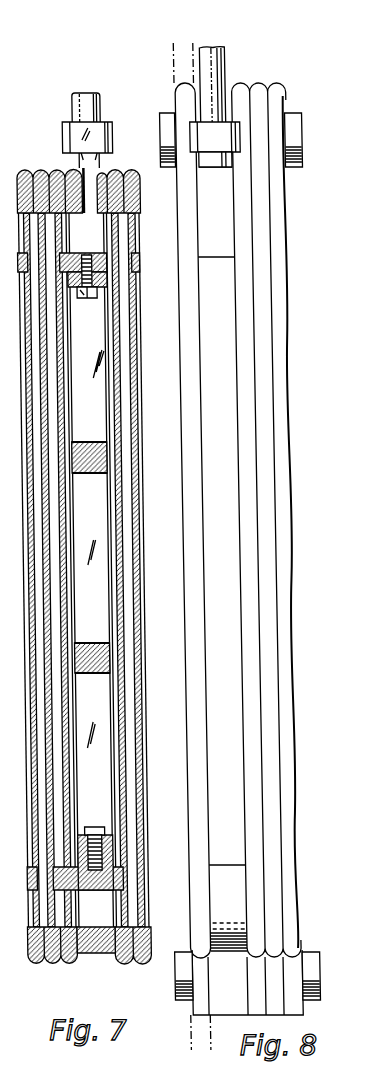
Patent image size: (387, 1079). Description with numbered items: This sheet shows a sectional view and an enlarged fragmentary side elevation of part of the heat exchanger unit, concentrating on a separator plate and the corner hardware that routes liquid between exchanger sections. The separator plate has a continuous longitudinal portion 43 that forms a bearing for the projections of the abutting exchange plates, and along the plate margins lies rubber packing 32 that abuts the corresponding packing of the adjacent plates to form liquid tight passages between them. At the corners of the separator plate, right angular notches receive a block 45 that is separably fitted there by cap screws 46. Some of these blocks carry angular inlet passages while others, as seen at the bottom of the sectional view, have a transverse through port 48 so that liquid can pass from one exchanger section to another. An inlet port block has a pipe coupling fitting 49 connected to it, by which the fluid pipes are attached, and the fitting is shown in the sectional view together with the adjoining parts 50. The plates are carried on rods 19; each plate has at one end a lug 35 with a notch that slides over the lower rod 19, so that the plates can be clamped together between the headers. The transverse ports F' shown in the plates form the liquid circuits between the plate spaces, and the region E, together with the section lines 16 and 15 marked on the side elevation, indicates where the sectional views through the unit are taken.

In FIG. 7, the bolt 50 is at (98, 113).
In FIG. 8, the bolt 50 is at (220, 83).
In FIG. 7, the pipe coupling fitting 49 is at (75, 160).
In FIG. 8, the pipe coupling fitting 49 is at (205, 157).
In FIG. 7, the block 45 is at (101, 168).
In FIG. 8, the block 45 is at (216, 227).
In FIG. 7, the fin F' is at (88, 568).
In FIG. 7, the cap screw 46 is at (74, 297).
In FIG. 7, the rubber packing 32 is at (113, 317).
In FIG. 8, the rubber packing 32 is at (172, 100).
In FIG. 7, the core tube E is at (92, 372).
In FIG. 8, the core tube E is at (200, 192).
In FIG. 7, the continuous longitudinal portion 43 is at (92, 422).
In FIG. 7, the transverse through port 48 is at (96, 953).
In FIG. 8, the section line 16 is at (177, 43).
In FIG. 8, the section line 15 is at (197, 43).
In FIG. 8, the rod 19 is at (161, 133).
In FIG. 8, the lug 35 is at (218, 1005).